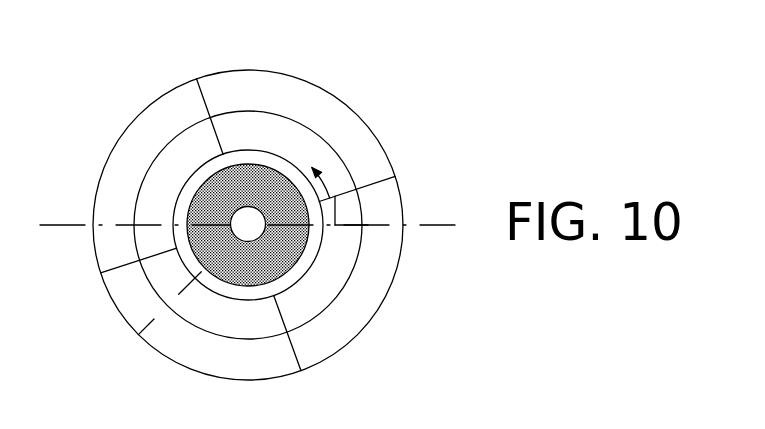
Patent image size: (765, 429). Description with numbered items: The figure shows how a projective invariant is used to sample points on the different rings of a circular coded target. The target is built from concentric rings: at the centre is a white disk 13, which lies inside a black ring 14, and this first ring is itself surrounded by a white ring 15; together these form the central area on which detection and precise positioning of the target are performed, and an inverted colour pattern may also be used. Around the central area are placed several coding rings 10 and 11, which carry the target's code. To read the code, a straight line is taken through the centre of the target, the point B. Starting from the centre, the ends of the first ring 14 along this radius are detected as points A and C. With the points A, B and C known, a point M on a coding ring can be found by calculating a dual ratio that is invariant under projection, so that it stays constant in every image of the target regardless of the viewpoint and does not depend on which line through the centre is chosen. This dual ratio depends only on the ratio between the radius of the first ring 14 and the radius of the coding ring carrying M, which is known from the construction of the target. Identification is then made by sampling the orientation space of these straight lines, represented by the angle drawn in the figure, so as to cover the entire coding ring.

The coding ring 10 is at (340, 172).
The coding ring 11 is at (393, 205).
The white disk 13 is at (303, 243).
The black ring 14 is at (188, 208).
The white ring 15 is at (203, 175).
The point A is at (197, 270).
The point B is at (248, 224).
The point C is at (293, 180).
The point M is at (332, 148).